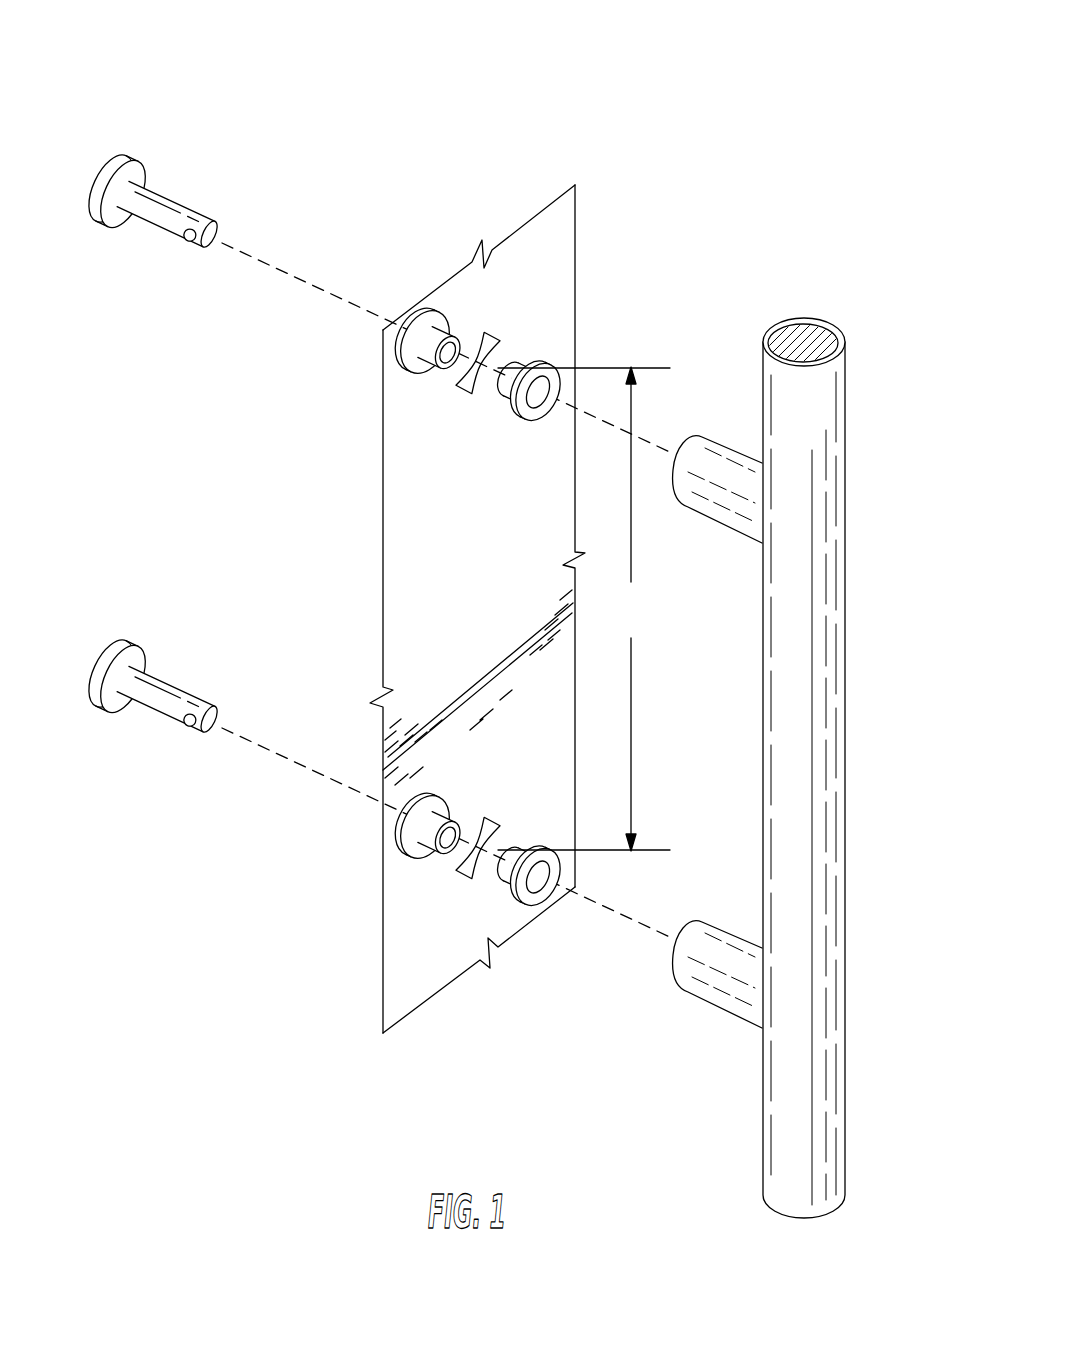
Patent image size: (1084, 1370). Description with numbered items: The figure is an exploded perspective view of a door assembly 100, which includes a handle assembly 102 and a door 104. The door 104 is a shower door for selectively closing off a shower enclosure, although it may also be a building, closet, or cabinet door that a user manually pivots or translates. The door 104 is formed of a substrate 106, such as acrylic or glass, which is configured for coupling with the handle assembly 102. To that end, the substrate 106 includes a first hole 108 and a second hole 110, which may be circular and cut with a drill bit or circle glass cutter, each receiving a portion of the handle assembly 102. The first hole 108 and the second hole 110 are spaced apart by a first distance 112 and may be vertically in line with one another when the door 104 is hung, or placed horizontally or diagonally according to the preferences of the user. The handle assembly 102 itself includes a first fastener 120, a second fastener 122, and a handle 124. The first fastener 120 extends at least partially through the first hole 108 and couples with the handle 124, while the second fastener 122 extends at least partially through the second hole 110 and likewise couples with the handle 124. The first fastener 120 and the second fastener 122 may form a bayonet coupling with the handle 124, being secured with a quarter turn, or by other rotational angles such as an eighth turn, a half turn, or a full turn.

The door assembly 100 is at (777, 155).
The handle assembly 102 is at (206, 110).
The door 104 is at (580, 184).
The substrate 106 is at (543, 290).
The first hole 108 is at (470, 392).
The second hole 110 is at (489, 828).
The first distance 112 is at (584, 609).
The first fastener 120 is at (99, 242).
The second fastener 122 is at (101, 729).
The handle 124 is at (849, 714).